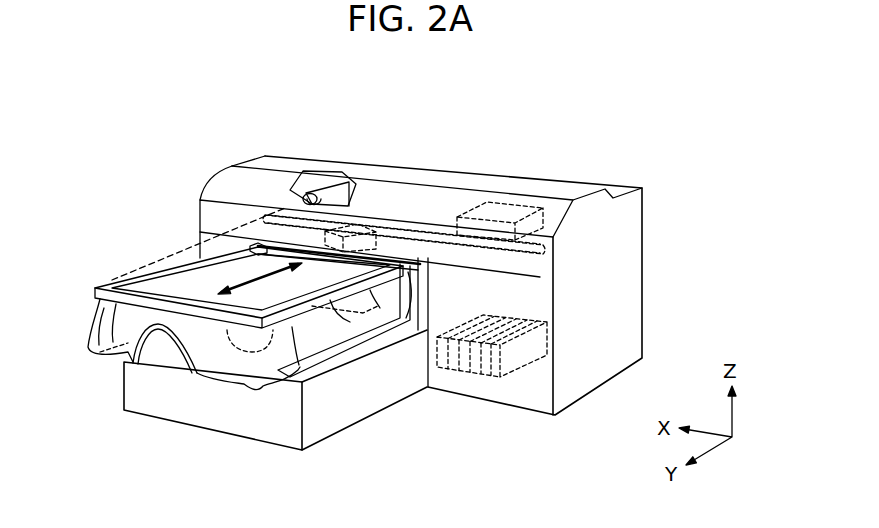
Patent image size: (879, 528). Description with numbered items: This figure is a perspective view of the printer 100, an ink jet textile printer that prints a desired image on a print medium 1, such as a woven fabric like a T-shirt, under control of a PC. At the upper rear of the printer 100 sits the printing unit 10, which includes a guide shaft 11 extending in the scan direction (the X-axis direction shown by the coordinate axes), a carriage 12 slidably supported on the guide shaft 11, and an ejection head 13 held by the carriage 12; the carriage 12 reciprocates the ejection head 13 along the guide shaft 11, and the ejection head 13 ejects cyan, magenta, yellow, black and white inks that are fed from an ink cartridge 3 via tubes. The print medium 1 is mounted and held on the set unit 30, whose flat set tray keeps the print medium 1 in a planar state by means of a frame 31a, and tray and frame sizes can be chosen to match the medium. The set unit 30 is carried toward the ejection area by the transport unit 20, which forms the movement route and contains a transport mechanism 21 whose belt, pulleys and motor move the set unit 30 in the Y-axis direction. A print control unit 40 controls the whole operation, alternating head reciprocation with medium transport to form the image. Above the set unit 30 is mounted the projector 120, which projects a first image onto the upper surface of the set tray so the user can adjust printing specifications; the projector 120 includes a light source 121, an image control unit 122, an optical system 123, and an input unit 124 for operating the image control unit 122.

The print medium 1 is at (90, 340).
The ink cartridge 3 is at (468, 326).
The printing unit 10 is at (491, 115).
The guide shaft 11 is at (434, 228).
The carriage 12 is at (270, 299).
The ejection head 13 is at (396, 233).
The transport unit 20 is at (287, 374).
The transport mechanism 21 is at (375, 393).
The set unit 30 is at (98, 268).
The frame 31a is at (152, 268).
The print control unit 40 is at (497, 212).
The printer 100 is at (490, 93).
The projector 120 is at (277, 136).
The light source 121 is at (277, 136).
The image control unit 122 is at (277, 136).
The optical system 123 is at (277, 136).
The input unit 124 is at (312, 183).